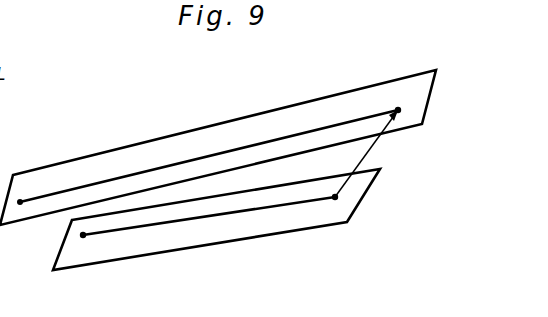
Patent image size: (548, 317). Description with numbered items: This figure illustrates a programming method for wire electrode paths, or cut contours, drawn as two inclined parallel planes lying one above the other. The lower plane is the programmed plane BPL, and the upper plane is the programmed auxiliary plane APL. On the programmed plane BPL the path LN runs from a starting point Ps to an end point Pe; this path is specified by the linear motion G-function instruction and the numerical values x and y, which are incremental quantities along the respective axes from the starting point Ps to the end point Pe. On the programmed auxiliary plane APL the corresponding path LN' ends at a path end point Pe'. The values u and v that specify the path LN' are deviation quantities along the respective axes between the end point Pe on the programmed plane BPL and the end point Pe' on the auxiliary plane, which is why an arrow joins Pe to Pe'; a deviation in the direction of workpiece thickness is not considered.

The programmed auxiliary plane APL is at (173, 143).
The wire electrode path on the programmed auxiliary plane LN' is at (207, 135).
The path end point on the programmed auxiliary plane Pe' is at (403, 105).
The programmed plane BPL is at (360, 193).
The wire electrode path on the programmed plane LN is at (209, 243).
The starting point Ps is at (79, 247).
The path end point on the programmed plane Pe is at (360, 165).